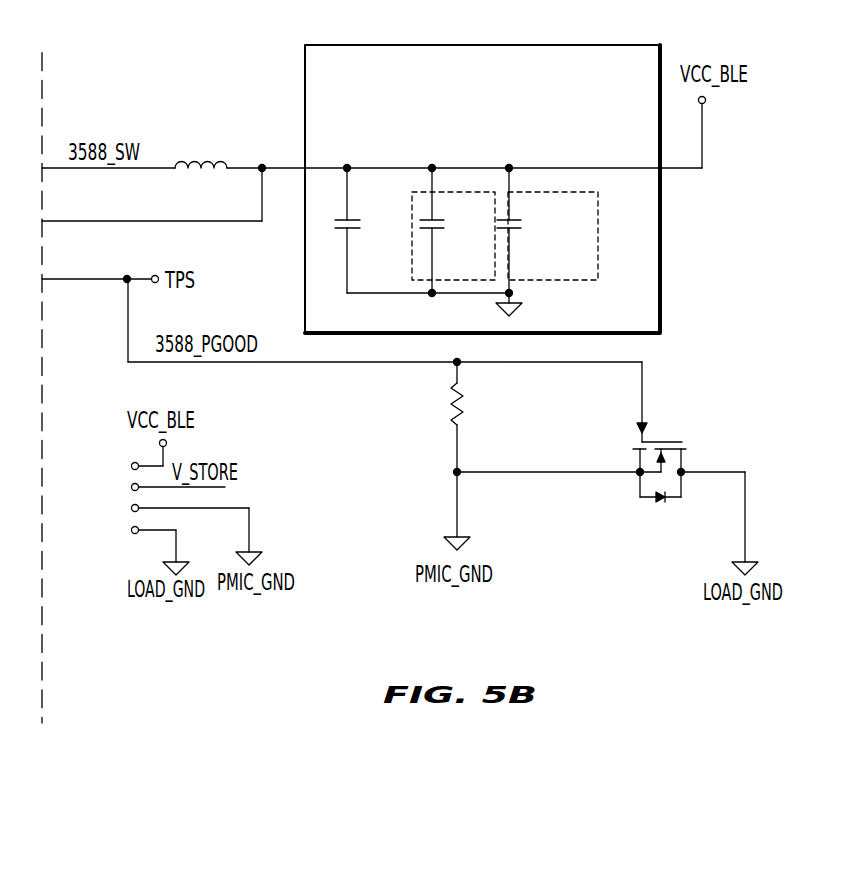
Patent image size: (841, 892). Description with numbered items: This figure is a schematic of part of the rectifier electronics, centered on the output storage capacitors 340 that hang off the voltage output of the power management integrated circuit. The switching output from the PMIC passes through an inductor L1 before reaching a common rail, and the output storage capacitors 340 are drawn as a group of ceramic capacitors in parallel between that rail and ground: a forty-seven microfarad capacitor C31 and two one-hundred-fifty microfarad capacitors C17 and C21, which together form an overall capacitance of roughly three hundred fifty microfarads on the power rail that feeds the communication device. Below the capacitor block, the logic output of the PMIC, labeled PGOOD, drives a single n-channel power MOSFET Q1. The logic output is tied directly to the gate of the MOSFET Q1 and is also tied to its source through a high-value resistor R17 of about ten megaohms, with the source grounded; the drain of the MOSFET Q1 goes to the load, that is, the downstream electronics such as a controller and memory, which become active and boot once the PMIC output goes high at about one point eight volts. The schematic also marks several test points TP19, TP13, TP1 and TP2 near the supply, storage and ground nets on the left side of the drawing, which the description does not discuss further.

The output storage capacitor 340 is at (468, 45).
The inductor L1 is at (201, 177).
The capacitor C31 is at (365, 229).
The capacitor C17 is at (453, 231).
The capacitor C21 is at (547, 234).
The resistor R17 is at (476, 417).
The transistor Q1 is at (656, 491).
The test point TP19 is at (112, 460).
The test point TP13 is at (155, 482).
The test point TP1 is at (170, 504).
The test point TP2 is at (133, 525).